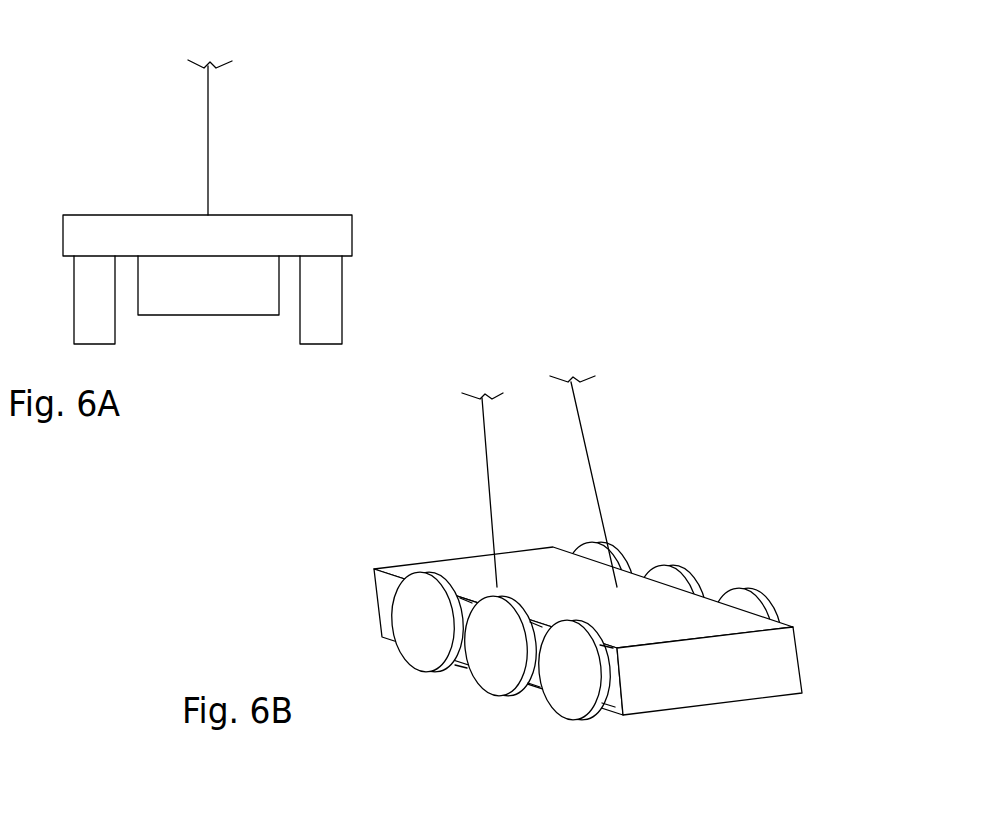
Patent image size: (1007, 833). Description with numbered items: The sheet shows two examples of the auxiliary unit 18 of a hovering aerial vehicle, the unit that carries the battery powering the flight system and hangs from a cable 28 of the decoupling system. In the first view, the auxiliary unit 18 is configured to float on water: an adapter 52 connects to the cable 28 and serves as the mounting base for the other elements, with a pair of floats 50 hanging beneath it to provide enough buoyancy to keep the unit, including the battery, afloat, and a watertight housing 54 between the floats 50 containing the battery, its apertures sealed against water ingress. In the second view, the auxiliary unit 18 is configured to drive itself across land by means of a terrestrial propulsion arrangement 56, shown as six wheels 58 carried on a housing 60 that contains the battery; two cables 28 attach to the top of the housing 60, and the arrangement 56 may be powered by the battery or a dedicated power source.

In FIG. 6A, the auxiliary unit 18 is at (130, 134).
In FIG. 6B, the auxiliary unit 18 is at (776, 473).
In FIG. 6A, the cable 28 is at (208, 147).
In FIG. 6B, the cable 28 is at (487, 476).
In FIG. 6A, the floats 50 is at (74, 312).
In FIG. 6A, the adapter 52 is at (326, 238).
In FIG. 6A, the watertight housing 54 is at (208, 300).
In FIG. 6B, the terrestrial propulsion arrangement 56 is at (454, 675).
In FIG. 6B, the wheels 58 is at (752, 588).
In FIG. 6B, the housing 60 is at (780, 660).